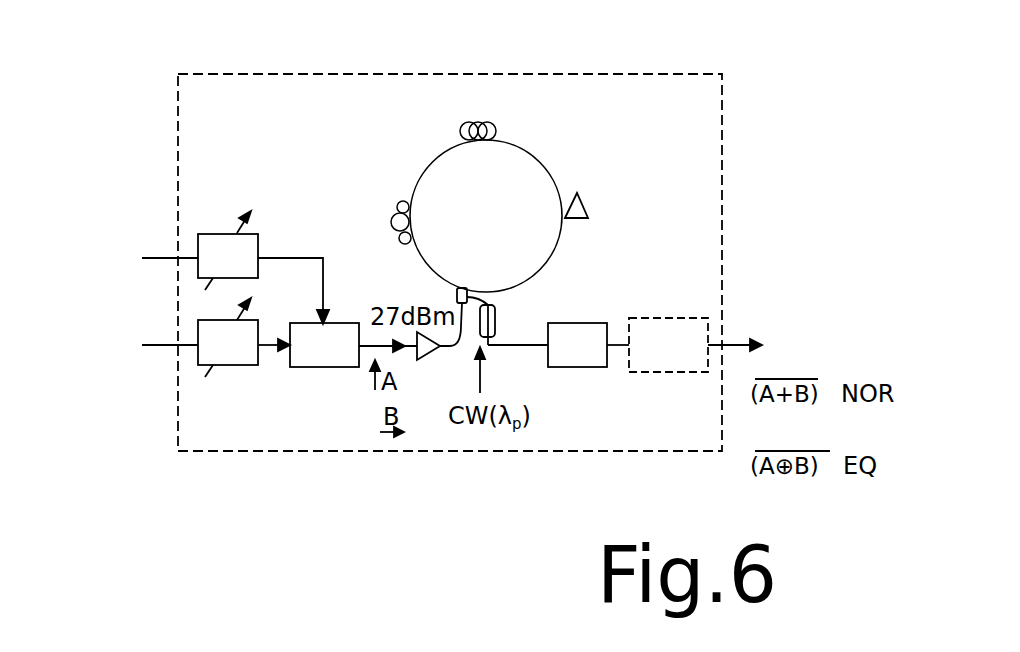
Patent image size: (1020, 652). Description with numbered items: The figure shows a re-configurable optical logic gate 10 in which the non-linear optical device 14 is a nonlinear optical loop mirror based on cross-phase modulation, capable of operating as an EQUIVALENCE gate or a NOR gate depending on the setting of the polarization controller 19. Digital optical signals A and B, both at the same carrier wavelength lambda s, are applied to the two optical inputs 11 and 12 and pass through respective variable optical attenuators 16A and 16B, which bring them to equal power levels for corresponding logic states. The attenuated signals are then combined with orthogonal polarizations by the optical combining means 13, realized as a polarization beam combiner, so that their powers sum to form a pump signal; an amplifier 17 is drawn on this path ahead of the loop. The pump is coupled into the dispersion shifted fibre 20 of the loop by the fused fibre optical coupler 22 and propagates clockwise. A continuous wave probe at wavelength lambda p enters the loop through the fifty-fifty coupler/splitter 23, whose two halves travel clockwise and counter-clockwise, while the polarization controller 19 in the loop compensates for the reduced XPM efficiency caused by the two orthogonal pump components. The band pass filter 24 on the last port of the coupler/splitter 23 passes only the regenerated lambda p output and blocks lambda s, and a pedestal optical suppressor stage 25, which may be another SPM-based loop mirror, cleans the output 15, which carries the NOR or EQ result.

The optical logic gate 10 is at (730, 73).
The optical input 11 is at (146, 268).
The optical input 12 is at (153, 352).
The optical combining means 13 is at (308, 370).
The non-linear optical device 14 is at (587, 214).
The optical output 15 is at (773, 347).
The variable optical attenuator 16A is at (196, 219).
The variable optical attenuator 16B is at (228, 372).
The optical amplifier 17 is at (428, 360).
The polarization controller 19 is at (390, 188).
The dispersion shifted fibre 20 is at (469, 74).
The optical coupler 22 is at (463, 287).
The 50:50 coupler/splitter 23 is at (502, 318).
The band pass filter 24 is at (568, 367).
The pedestal optical suppressor stage 25 is at (658, 372).